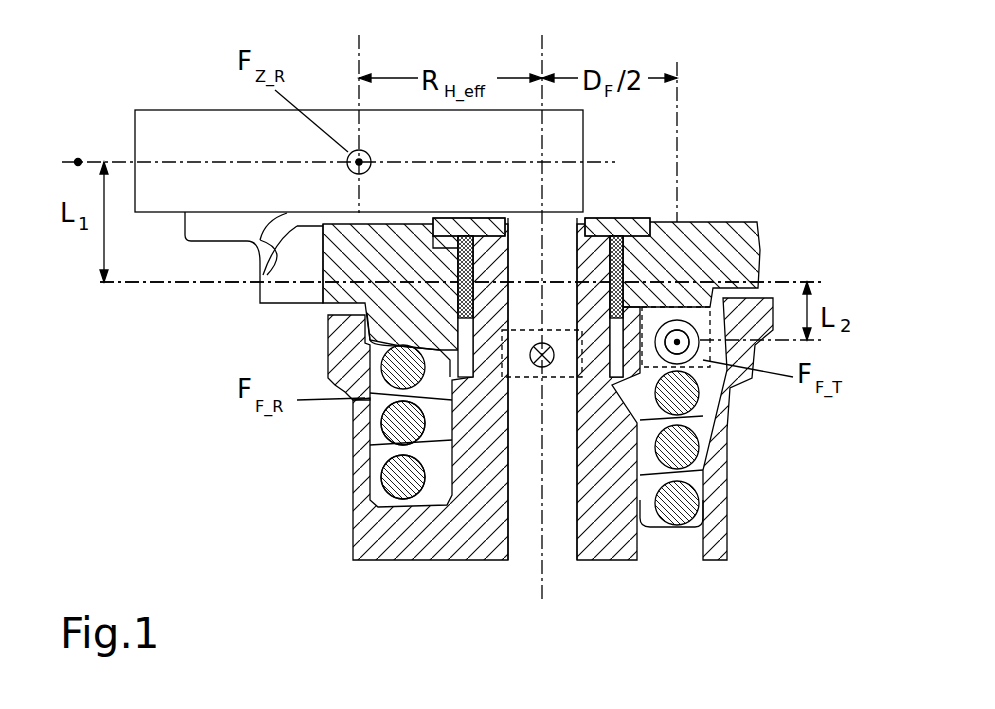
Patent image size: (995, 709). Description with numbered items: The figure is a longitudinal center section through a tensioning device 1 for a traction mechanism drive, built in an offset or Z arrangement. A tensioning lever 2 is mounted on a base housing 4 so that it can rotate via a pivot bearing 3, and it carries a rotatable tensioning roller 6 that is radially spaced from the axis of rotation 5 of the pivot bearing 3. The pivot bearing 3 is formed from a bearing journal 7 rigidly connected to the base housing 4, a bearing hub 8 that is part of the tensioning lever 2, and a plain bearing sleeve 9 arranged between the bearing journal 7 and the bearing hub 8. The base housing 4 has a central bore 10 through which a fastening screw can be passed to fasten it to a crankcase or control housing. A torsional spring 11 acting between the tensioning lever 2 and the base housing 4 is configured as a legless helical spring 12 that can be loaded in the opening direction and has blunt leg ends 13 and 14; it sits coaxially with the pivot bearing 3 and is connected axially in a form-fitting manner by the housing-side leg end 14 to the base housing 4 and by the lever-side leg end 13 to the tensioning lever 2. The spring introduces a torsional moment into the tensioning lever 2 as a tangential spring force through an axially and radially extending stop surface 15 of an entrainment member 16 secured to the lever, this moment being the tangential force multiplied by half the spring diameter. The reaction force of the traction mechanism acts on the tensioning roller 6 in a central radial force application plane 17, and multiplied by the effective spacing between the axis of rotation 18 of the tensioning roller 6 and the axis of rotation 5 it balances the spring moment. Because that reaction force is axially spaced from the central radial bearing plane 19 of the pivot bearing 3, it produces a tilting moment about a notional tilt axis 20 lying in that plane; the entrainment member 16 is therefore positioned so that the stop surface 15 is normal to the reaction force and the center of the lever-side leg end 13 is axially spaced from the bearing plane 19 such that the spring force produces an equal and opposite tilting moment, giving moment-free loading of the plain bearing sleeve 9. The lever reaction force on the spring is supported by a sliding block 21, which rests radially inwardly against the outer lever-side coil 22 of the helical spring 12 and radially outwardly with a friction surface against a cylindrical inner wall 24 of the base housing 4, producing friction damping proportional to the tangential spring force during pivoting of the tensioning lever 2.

The tensioning device 1 is at (152, 468).
The tensioning lever 2 is at (323, 302).
The pivot bearing 3 is at (622, 186).
The base housing 4 is at (428, 532).
The axis of rotation 5 is at (542, 48).
The tensioning roller 6 is at (227, 145).
The bearing journal 7 is at (622, 253).
The bearing hub 8 is at (630, 298).
The plain bearing sleeve 9 is at (718, 223).
The central bore 10 is at (560, 568).
The torsional spring 11 is at (403, 423).
The legless helical spring 12 is at (403, 423).
The lever-side leg end 13 is at (730, 397).
The housing-side leg end 14 is at (677, 503).
The stop surface 15 is at (705, 343).
The entrainment member 16 is at (705, 343).
The central radial force application plane 17 is at (78, 162).
The axis of rotation of the tensioning roller 18 is at (359, 48).
The central radial bearing plane 19 is at (168, 282).
The notional tilt axis 20 is at (168, 282).
The sliding block 21 is at (503, 355).
The outer lever-side coil 22 is at (727, 432).
The cylindrical inner wall 24 is at (452, 440).